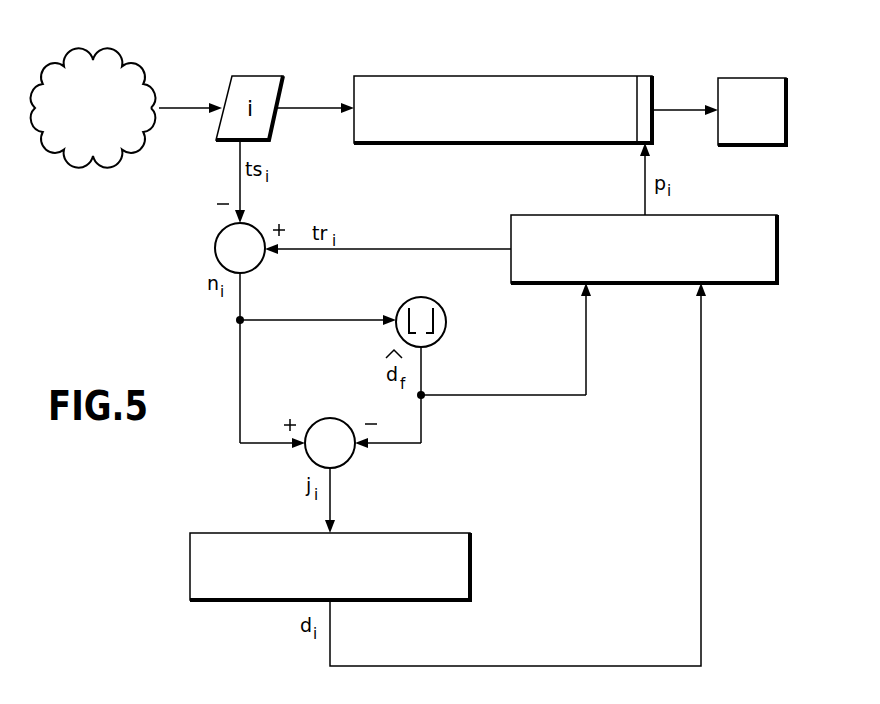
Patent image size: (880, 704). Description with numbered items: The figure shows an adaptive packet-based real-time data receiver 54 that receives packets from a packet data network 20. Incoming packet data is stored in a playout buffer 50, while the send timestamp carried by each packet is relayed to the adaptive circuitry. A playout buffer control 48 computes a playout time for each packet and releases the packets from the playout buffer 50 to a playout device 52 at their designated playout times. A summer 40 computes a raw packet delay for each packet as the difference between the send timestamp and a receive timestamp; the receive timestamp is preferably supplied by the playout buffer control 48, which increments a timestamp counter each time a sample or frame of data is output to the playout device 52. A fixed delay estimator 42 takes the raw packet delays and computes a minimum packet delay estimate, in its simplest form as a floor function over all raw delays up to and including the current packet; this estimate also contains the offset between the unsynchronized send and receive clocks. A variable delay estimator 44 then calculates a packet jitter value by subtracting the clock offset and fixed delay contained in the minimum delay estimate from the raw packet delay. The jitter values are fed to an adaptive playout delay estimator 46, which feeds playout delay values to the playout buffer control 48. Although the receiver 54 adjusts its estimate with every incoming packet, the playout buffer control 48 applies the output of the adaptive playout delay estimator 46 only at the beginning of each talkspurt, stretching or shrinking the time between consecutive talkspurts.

The packet data network 20 is at (78, 123).
The summer 40 is at (258, 265).
The fixed delay estimator 42 is at (438, 341).
The variable delay estimator 44 is at (348, 461).
The adaptive playout delay estimator 46 is at (216, 532).
The playout buffer control 48 is at (746, 215).
The playout buffer 50 is at (519, 125).
The playout device 52 is at (735, 126).
The receiver 54 is at (368, 40).